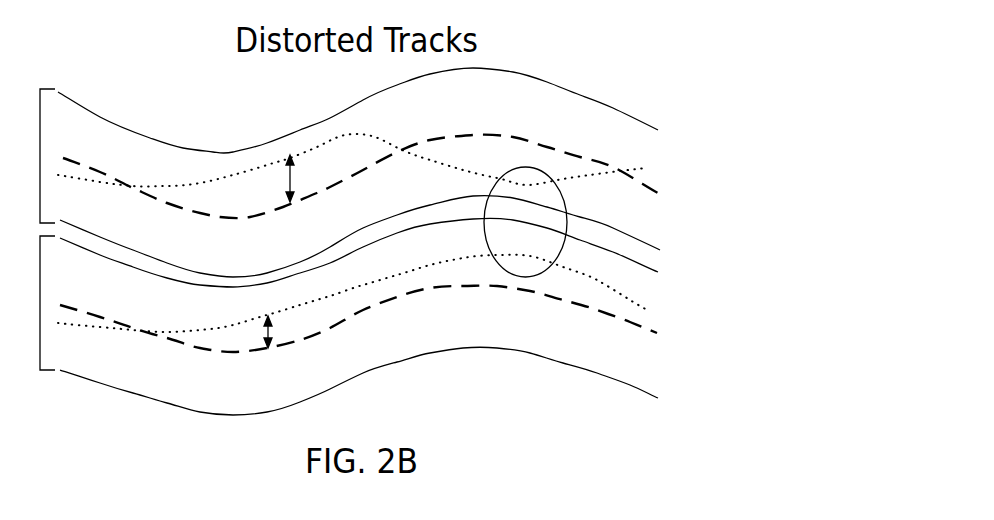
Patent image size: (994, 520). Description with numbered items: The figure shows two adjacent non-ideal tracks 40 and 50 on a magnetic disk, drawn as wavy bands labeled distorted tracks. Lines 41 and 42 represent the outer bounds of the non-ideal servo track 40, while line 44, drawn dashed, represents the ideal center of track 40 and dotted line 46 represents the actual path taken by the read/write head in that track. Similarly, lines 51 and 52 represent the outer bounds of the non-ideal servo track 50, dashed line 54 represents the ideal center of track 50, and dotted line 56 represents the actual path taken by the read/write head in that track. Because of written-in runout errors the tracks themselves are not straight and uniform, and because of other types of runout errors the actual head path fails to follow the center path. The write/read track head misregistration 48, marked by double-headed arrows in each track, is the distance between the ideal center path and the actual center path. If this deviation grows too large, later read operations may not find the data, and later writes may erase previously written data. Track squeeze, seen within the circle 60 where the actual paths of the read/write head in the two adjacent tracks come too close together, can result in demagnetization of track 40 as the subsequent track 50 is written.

The non-ideal servo track 40 is at (40, 155).
The outer bound line 41 is at (610, 107).
The outer bound line 42 is at (610, 233).
The ideal center line 44 is at (230, 219).
The actual head path line 46 is at (353, 141).
The track misregistration 48 is at (291, 178).
The non-ideal servo track 50 is at (40, 304).
The outer bound line 51 is at (140, 268).
The outer bound line 52 is at (601, 374).
The ideal center line 54 is at (456, 290).
The actual head path line 56 is at (213, 327).
The track squeeze circle 60 is at (566, 206).